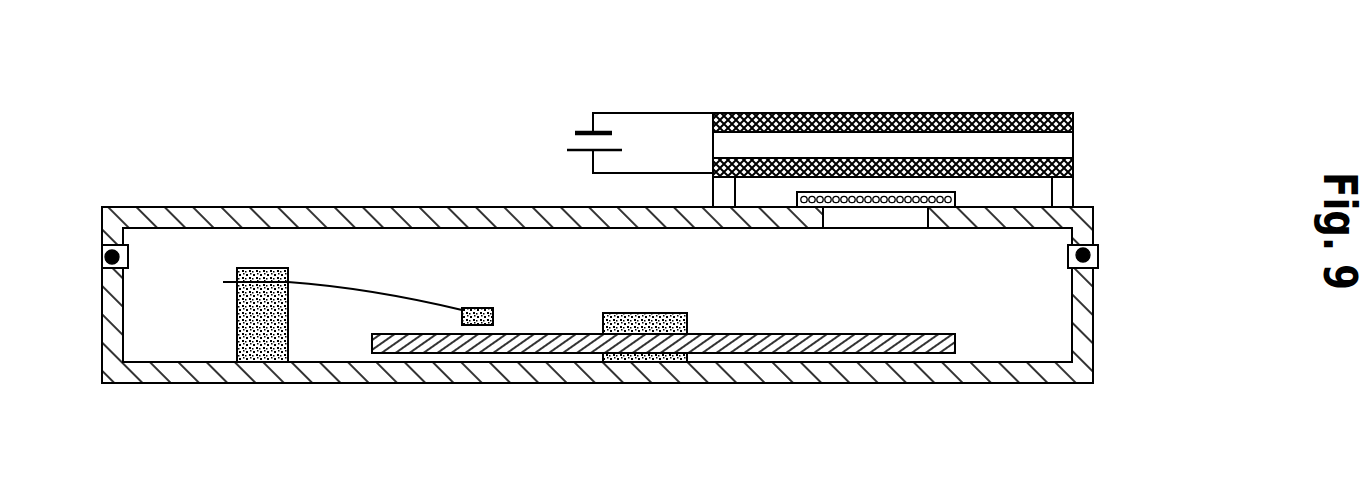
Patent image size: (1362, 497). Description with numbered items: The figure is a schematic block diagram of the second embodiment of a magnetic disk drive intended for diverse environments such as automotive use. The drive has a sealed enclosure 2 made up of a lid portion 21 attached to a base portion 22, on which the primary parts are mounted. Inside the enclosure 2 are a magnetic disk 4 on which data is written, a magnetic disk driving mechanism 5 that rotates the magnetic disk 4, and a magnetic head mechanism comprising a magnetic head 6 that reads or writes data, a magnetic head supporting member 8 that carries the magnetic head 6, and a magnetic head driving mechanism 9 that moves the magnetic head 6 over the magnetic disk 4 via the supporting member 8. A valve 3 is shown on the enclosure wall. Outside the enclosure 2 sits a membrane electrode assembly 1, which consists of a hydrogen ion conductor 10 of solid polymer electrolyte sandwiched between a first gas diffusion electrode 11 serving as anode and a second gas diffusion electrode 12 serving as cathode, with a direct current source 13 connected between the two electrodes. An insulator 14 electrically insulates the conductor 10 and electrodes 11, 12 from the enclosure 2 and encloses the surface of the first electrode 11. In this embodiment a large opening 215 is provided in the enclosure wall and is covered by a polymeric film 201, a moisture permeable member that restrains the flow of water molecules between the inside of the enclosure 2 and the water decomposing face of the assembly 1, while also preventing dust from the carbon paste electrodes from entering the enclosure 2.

The membrane electrode assembly 1 is at (920, 147).
The enclosure 2 is at (176, 207).
The valve 3 is at (102, 257).
The magnetic disk 4 is at (773, 334).
The magnetic disk driving mechanism 5 is at (648, 313).
The magnetic head 6 is at (493, 316).
The magnetic head supporting member 8 is at (427, 300).
The magnetic head driving mechanism 9 is at (237, 315).
The hydrogen ion conductor 10 is at (1065, 147).
The first gas diffusion electrode (anode) 11 is at (1073, 165).
The second gas diffusion electrode (cathode) 12 is at (1025, 113).
The direct current source 13 is at (572, 148).
The insulator 14 is at (720, 193).
The lid portion 21 is at (318, 207).
The base portion 22 is at (178, 375).
The polymeric film 201 is at (818, 215).
The opening 215 is at (878, 220).